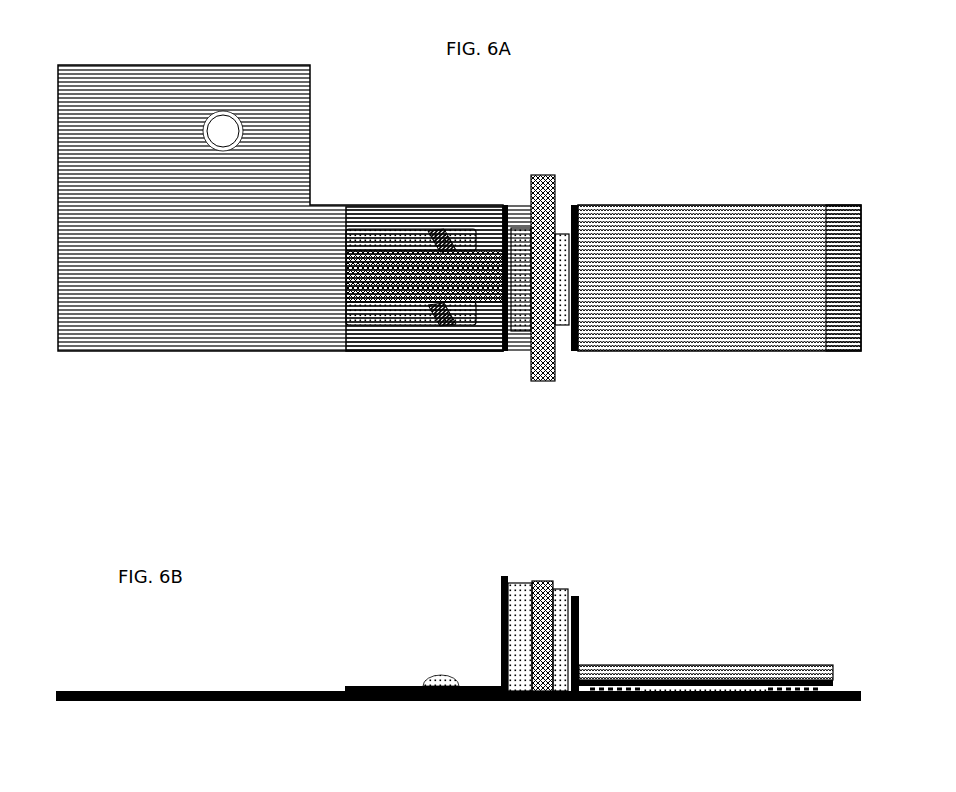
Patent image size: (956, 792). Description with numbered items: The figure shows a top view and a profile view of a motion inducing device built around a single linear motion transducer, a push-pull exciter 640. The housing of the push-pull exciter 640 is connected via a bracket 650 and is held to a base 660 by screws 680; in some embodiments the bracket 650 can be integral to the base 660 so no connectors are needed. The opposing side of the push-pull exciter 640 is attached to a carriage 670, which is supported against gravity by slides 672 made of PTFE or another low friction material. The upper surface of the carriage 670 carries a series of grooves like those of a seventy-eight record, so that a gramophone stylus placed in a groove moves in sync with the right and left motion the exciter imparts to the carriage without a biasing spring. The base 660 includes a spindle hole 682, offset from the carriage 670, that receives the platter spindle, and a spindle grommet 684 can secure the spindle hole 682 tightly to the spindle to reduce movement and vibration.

In FIG. 6A, the push-pull exciter 640 is at (527, 355).
In FIG. 6B, the push-pull exciter 640 is at (538, 586).
In FIG. 6A, the bracket 650 is at (463, 305).
In FIG. 6B, the bracket 650 is at (492, 672).
In FIG. 6A, the base 660 is at (172, 267).
In FIG. 6B, the base 660 is at (250, 683).
In FIG. 6A, the carriage 670 is at (710, 280).
In FIG. 6B, the carriage 670 is at (668, 655).
In FIG. 6B, the slides 672 is at (605, 695).
In FIG. 6A, the screws 680 is at (433, 226).
In FIG. 6A, the spindle hole 682 is at (217, 125).
In FIG. 6A, the spindle grommet 684 is at (208, 106).